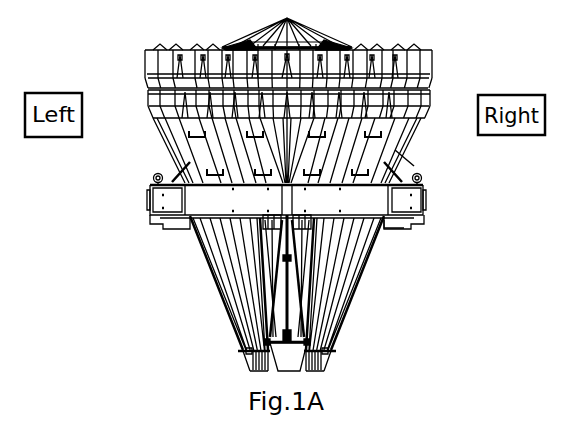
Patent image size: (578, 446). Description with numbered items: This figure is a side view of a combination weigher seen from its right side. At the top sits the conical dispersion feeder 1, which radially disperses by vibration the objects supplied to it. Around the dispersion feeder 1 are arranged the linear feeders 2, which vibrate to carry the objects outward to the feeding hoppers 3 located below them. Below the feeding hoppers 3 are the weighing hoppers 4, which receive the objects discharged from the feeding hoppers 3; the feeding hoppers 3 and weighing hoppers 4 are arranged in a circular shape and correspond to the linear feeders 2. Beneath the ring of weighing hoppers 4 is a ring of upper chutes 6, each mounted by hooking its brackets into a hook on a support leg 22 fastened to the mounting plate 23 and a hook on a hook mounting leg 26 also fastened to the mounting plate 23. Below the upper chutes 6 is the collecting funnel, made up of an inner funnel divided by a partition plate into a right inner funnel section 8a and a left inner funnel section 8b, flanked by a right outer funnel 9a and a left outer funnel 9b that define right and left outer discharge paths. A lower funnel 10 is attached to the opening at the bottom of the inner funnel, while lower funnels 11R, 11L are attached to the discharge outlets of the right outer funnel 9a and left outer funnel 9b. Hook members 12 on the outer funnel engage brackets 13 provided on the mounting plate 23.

The dispersion feeder 1 is at (303, 23).
The linear feeder 2 is at (355, 46).
The feeding hopper 3 is at (424, 58).
The weighing hopper 4 is at (428, 95).
The upper chute 6 is at (242, 157).
The right inner funnel section 8a is at (300, 316).
The left inner funnel section 8b is at (272, 326).
The right outer funnel 9a is at (367, 264).
The left outer funnel 9b is at (208, 262).
The lower funnel 10 is at (289, 368).
The lower funnel 11L is at (248, 358).
The lower funnel 11R is at (322, 360).
The hook member 12 is at (385, 224).
The bracket 13 is at (413, 222).
The support leg 22 is at (157, 172).
The mounting plate 23 is at (416, 206).
The hook mounting leg 26 is at (417, 145).